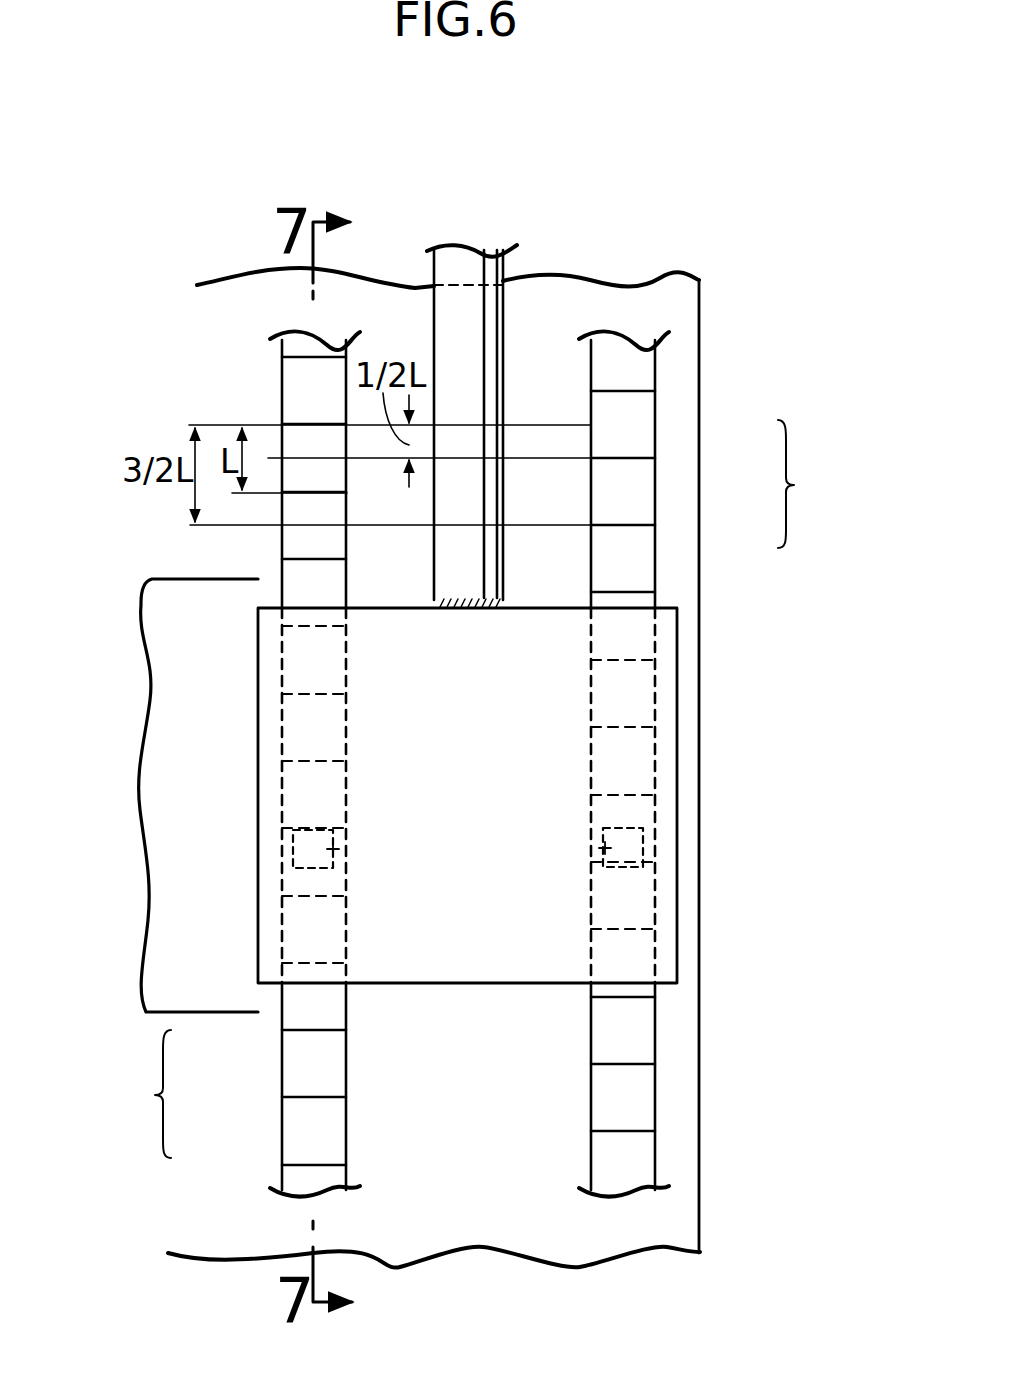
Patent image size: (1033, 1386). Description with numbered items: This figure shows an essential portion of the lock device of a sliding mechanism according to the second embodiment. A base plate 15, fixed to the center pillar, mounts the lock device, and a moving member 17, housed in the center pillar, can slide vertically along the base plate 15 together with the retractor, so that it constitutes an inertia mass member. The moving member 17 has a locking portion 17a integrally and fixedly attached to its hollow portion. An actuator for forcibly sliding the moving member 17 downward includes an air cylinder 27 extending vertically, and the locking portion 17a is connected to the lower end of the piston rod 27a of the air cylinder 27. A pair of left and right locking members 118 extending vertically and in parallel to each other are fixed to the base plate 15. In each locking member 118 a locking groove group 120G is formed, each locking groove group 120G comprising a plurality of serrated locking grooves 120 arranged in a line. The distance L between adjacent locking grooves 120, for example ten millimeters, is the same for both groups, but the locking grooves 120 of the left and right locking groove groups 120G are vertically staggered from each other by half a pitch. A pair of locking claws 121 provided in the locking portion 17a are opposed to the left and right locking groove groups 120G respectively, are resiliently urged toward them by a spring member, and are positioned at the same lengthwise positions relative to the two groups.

The base plate 15 is at (684, 300).
The moving member 17 is at (184, 594).
The locking portion 17a is at (668, 735).
The air cylinder 27 is at (512, 308).
The piston rod 27a is at (460, 268).
The locking member 118 is at (347, 1062).
The locking groove 120 is at (623, 458).
The locking groove group 120G is at (479, 789).
The locking claw 121 is at (338, 849).